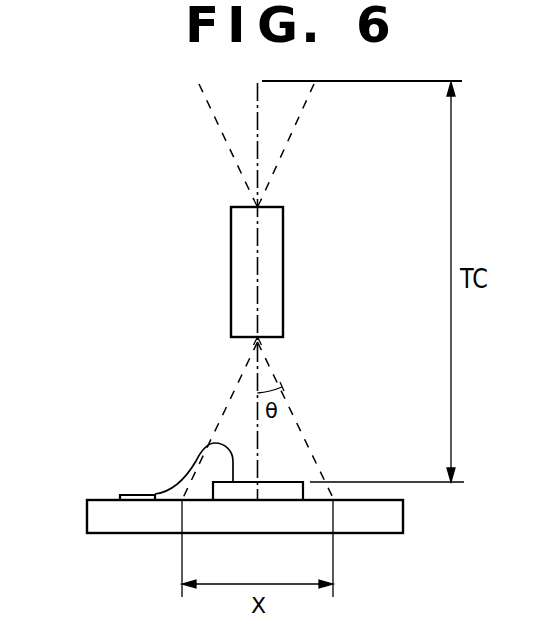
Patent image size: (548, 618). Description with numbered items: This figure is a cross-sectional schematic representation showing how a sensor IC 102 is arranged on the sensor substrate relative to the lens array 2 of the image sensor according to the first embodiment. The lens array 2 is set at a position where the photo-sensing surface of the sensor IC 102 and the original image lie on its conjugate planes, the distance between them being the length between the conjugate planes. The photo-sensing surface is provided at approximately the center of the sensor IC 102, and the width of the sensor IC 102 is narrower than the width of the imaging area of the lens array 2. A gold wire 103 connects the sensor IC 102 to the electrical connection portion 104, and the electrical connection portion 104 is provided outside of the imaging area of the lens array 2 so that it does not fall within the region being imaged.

The lens array 2 is at (243, 270).
The sensor IC 102 is at (282, 483).
The gold wire 103 is at (196, 461).
The electrical connection portion 104 is at (120, 495).